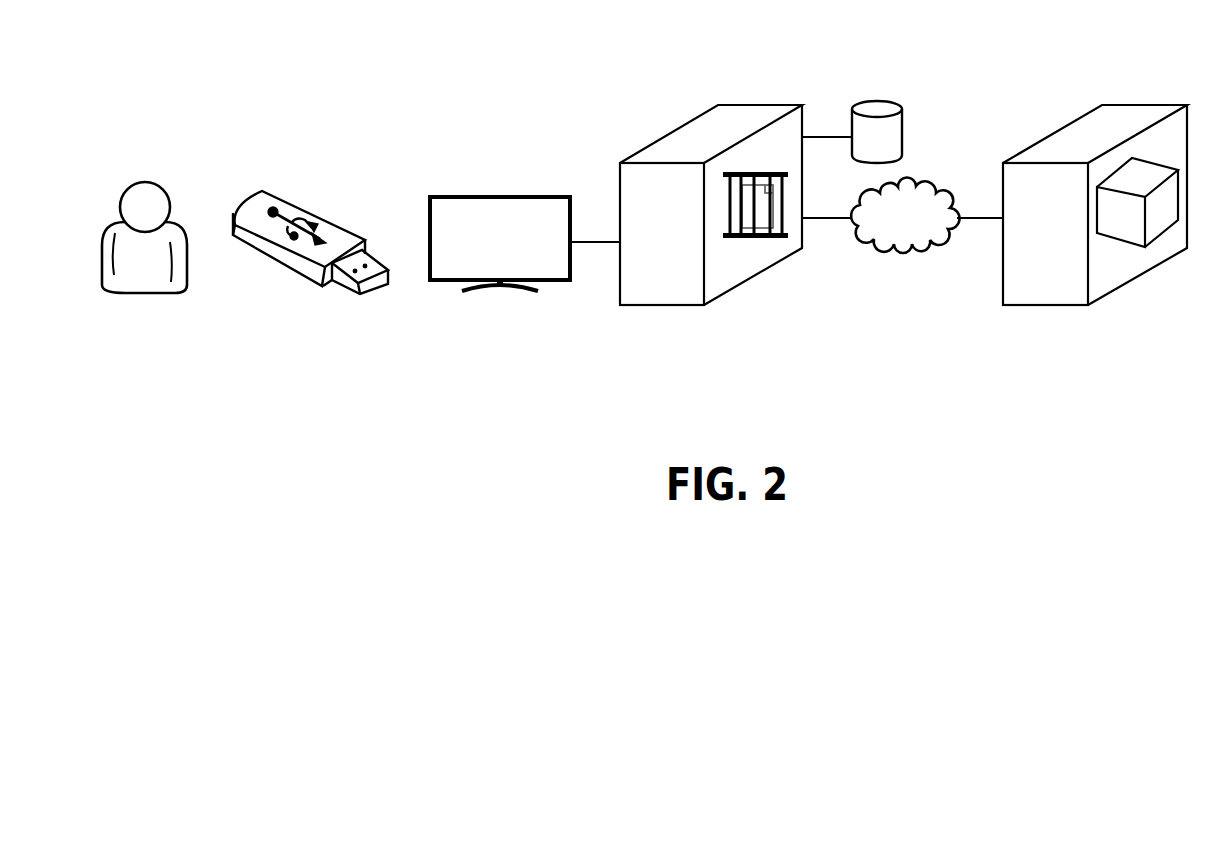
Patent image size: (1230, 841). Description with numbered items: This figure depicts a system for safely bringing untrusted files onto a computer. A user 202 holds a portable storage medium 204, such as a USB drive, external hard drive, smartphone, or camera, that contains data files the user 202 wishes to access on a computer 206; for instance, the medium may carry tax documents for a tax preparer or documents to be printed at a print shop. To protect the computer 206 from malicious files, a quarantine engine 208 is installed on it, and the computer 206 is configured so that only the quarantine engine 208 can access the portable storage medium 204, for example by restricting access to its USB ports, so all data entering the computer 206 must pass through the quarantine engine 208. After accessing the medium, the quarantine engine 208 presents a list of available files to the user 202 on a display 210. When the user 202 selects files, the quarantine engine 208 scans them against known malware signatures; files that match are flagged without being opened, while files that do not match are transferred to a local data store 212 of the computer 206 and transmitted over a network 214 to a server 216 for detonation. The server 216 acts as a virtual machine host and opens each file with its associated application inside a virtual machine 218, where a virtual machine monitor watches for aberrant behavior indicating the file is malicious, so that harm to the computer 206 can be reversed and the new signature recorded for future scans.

The user 202 is at (158, 182).
The portable storage medium 204 is at (317, 210).
The computer 206 is at (683, 123).
The quarantine engine 208 is at (757, 240).
The display 210 is at (523, 195).
The local data store 212 is at (883, 100).
The network 214 is at (912, 248).
The server 216 is at (1068, 123).
The virtual machine 218 is at (1157, 238).